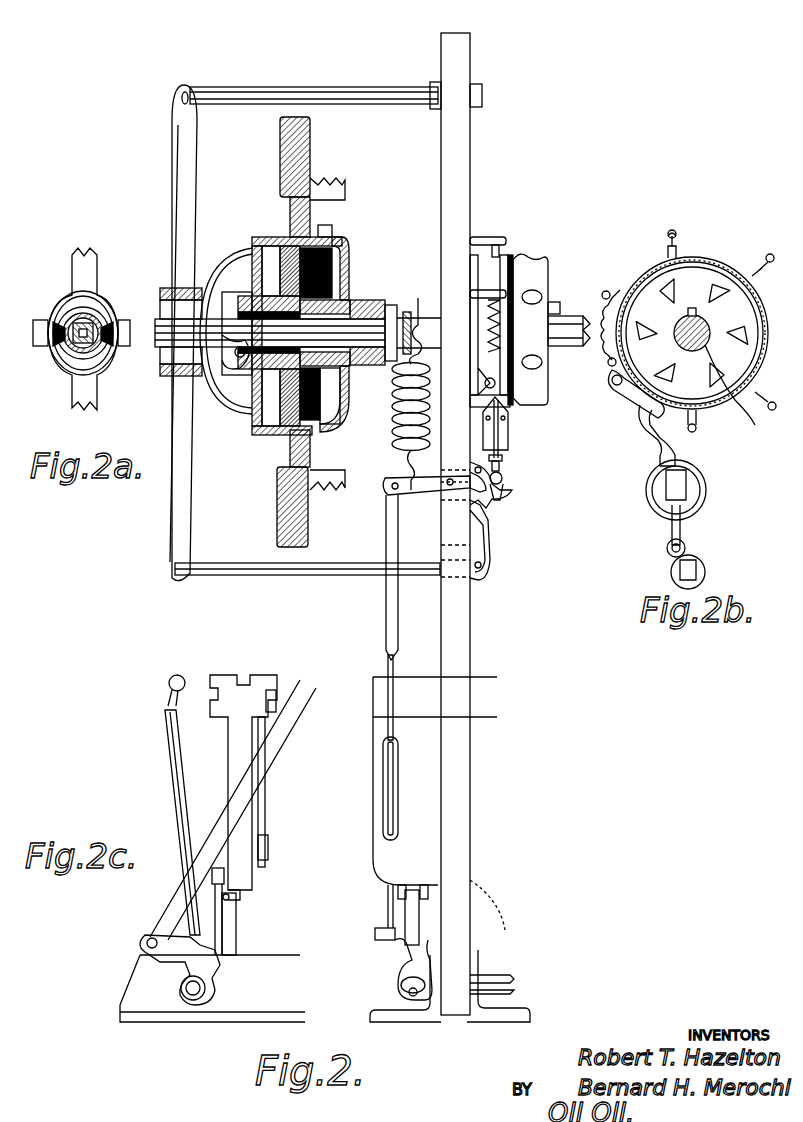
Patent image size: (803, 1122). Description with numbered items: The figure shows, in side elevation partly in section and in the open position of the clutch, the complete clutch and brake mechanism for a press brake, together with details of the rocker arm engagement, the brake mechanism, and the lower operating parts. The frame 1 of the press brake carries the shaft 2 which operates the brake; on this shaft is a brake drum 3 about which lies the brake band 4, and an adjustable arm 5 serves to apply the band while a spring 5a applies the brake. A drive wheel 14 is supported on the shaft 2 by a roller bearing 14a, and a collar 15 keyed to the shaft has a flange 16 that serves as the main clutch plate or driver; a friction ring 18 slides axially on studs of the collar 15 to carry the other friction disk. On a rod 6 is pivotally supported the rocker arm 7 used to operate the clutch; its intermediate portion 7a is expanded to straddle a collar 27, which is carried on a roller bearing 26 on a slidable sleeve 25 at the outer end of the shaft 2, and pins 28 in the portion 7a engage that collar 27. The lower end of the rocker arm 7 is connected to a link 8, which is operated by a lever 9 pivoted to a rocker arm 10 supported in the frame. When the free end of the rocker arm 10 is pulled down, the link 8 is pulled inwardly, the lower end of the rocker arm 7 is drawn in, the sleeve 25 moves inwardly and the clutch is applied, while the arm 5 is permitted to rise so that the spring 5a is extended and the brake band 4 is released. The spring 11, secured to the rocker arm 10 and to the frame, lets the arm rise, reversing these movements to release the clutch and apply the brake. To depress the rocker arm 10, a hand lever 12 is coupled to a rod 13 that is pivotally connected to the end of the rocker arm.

In FIG. 2, the frame 1 is at (462, 210).
In FIG. 2, the shaft 2 is at (360, 347).
In FIG. 2B, the shaft 2 is at (682, 322).
In FIG. 2, the brake drum 3 is at (542, 282).
In FIG. 2B, the brake drum 3 is at (690, 272).
In FIG. 2, the brake band 4 is at (500, 268).
In FIG. 2B, the brake band 4 is at (728, 274).
In FIG. 2, the adjustable arm 5 is at (505, 484).
In FIG. 2B, the adjustable arm 5 is at (645, 440).
In FIG. 2, the spring 5a is at (505, 345).
In FIG. 2B, the spring 5a is at (612, 350).
In FIG. 2, the rod 6 is at (260, 92).
In FIG. 2, the rocker arm 7 is at (180, 462).
In FIG. 2A, the intermediate portion 7a is at (104, 365).
In FIG. 2, the link 8 is at (315, 568).
In FIG. 2, the lever 9 is at (490, 538).
In FIG. 2, the rocker arm 10 is at (438, 494).
In FIG. 2, the spring 11 is at (400, 418).
In FIG. 2, the hand lever 12 is at (412, 917).
In FIG. 2C, the hand lever 12 is at (170, 783).
In FIG. 2, the rod 13 is at (385, 732).
In FIG. 2C, the rod 13 is at (262, 778).
In FIG. 2, the drive wheel 14 is at (310, 166).
In FIG. 2, the roller bearing 14a is at (350, 300).
In FIG. 2, the collar 15 is at (250, 300).
In FIG. 2, the flange 16 is at (345, 256).
In FIG. 2, the friction ring 18 is at (298, 238).
In FIG. 2A, the slidable sleeve 25 is at (88, 352).
In FIG. 2, the roller bearing 26 is at (165, 302).
In FIG. 2A, the roller bearing 26 is at (64, 352).
In FIG. 2A, the collar 27 is at (85, 312).
In FIG. 2A, the pins 28 is at (64, 318).